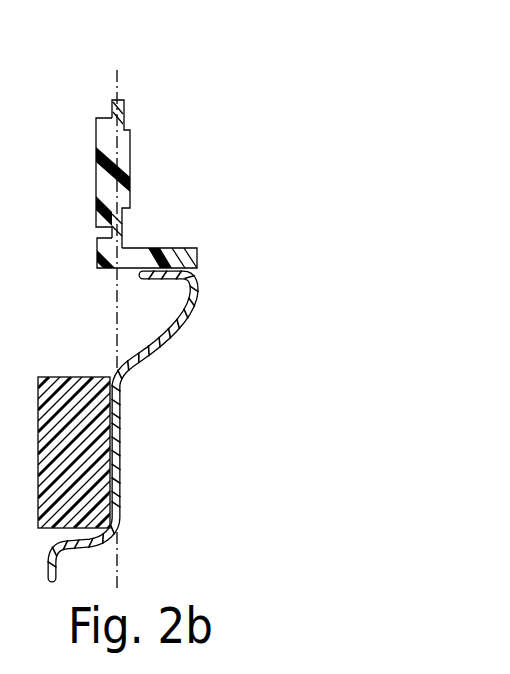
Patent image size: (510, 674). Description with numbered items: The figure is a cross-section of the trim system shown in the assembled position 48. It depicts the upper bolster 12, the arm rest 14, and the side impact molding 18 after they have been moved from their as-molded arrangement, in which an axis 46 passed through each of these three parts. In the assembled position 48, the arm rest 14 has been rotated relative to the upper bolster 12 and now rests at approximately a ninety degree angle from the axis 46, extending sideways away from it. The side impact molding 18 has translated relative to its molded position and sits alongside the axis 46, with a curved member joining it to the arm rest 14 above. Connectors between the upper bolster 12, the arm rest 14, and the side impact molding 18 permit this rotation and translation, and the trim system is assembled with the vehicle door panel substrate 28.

The axis 46 is at (116, 78).
The upper bolster 12 is at (130, 157).
The arm rest 14 is at (197, 253).
The vehicle door panel substrate 28 is at (195, 317).
The side impact molding 18 is at (112, 450).
The assembled position 48 is at (280, 170).